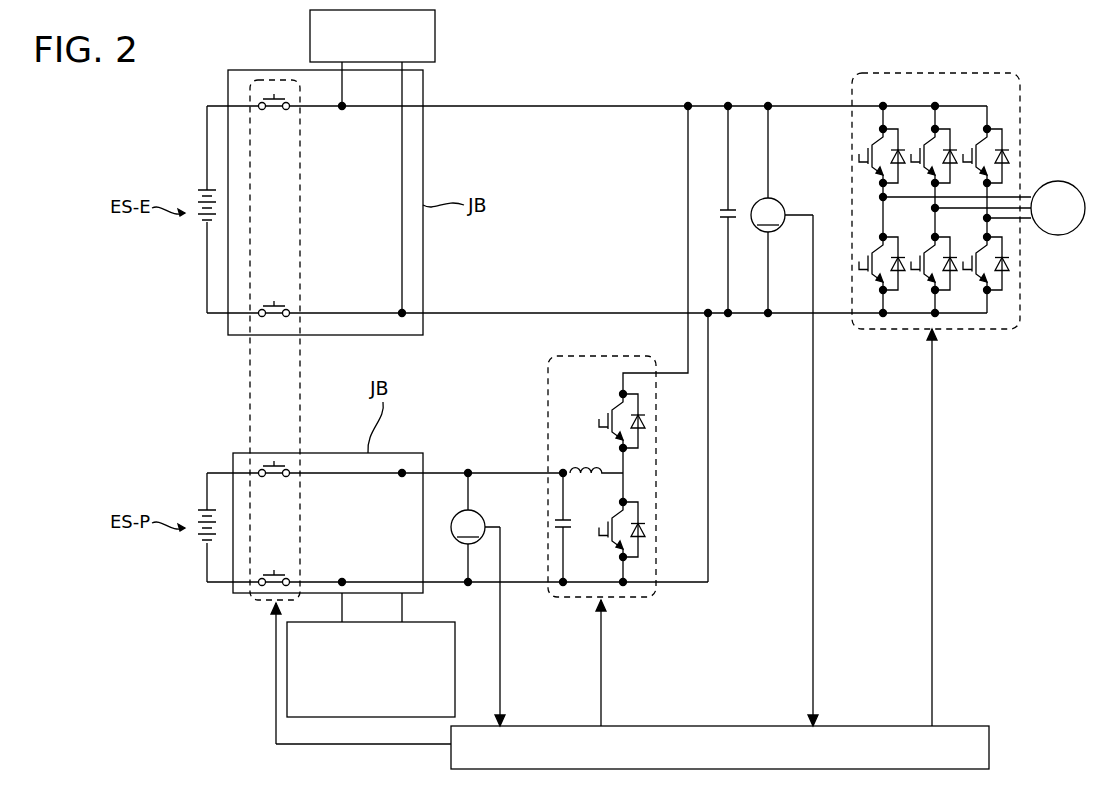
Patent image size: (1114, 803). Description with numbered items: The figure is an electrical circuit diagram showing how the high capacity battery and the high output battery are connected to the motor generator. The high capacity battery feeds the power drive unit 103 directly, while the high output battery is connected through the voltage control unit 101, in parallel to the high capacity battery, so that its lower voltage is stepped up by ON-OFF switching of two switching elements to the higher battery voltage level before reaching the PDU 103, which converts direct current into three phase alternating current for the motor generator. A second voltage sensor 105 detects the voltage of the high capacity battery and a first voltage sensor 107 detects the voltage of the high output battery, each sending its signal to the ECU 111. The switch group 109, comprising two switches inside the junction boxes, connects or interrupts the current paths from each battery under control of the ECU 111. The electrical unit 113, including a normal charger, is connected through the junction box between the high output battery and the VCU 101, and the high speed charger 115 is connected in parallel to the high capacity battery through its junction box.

The voltage control unit (VCU) 101 is at (546, 397).
The power drive unit (PDU) 103 is at (1020, 125).
The V2 sensor 105 is at (781, 203).
The V1 sensor 107 is at (486, 518).
The switch group 109 is at (247, 388).
The ECU 111 is at (989, 745).
The electrical unit 113 is at (372, 717).
The high speed charger 115 is at (435, 40).